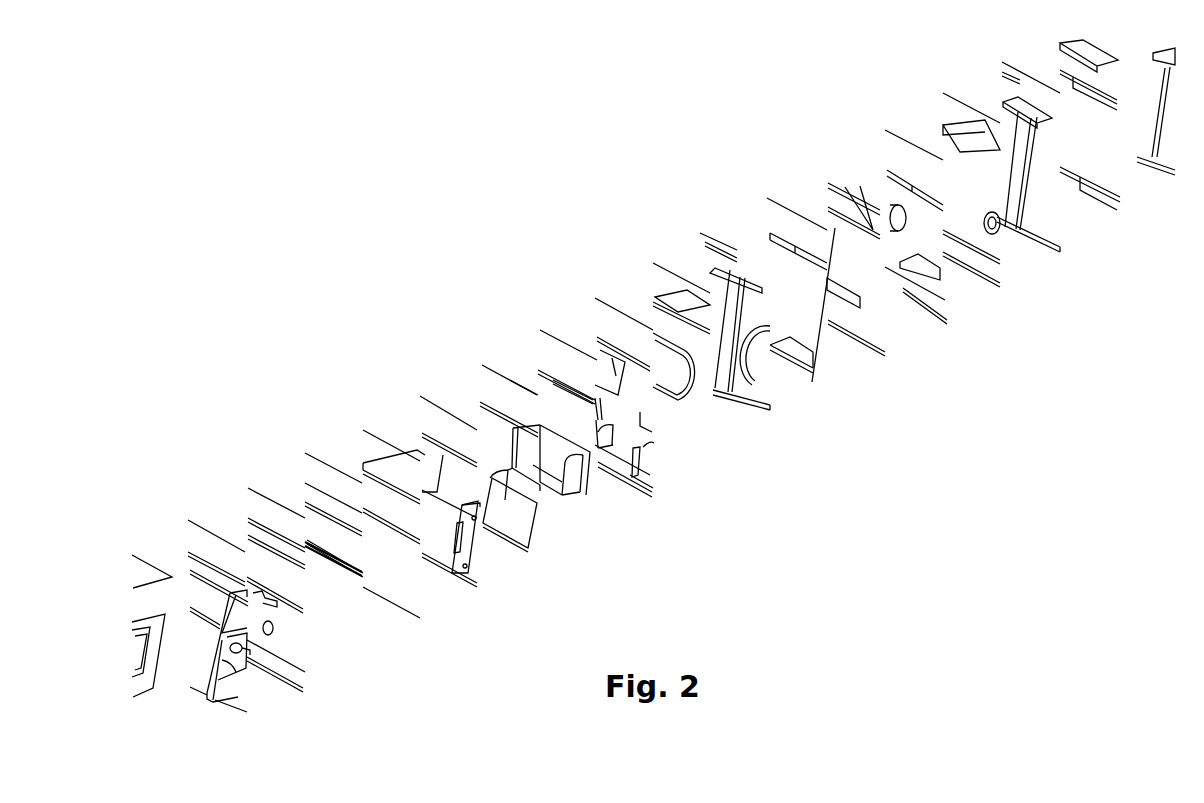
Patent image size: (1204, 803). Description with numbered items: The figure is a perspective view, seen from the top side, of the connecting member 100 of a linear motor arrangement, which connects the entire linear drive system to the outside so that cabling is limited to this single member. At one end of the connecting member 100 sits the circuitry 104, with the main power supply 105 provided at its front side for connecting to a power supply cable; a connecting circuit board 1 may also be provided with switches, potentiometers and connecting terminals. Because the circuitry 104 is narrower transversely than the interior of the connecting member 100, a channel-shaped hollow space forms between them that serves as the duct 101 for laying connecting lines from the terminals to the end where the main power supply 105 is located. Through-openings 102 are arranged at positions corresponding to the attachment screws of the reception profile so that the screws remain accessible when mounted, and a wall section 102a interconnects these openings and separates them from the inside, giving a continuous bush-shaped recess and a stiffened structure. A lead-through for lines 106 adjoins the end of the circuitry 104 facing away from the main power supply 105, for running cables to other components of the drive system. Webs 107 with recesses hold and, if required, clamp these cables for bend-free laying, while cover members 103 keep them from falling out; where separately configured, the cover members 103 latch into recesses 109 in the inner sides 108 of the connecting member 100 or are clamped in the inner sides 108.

The connecting member 100 is at (398, 113).
The duct 101 is at (174, 600).
The through-openings 102 is at (690, 360).
The wall section 102a is at (715, 390).
The cover members 103 is at (777, 383).
The circuitry 104 is at (405, 583).
The main power supply 105 is at (218, 678).
The lead-through for lines 106 is at (499, 516).
The webs 107 is at (640, 378).
The inner sides 108 is at (1113, 80).
The recesses 109 is at (716, 392).
The connecting circuit board 1 is at (873, 230).